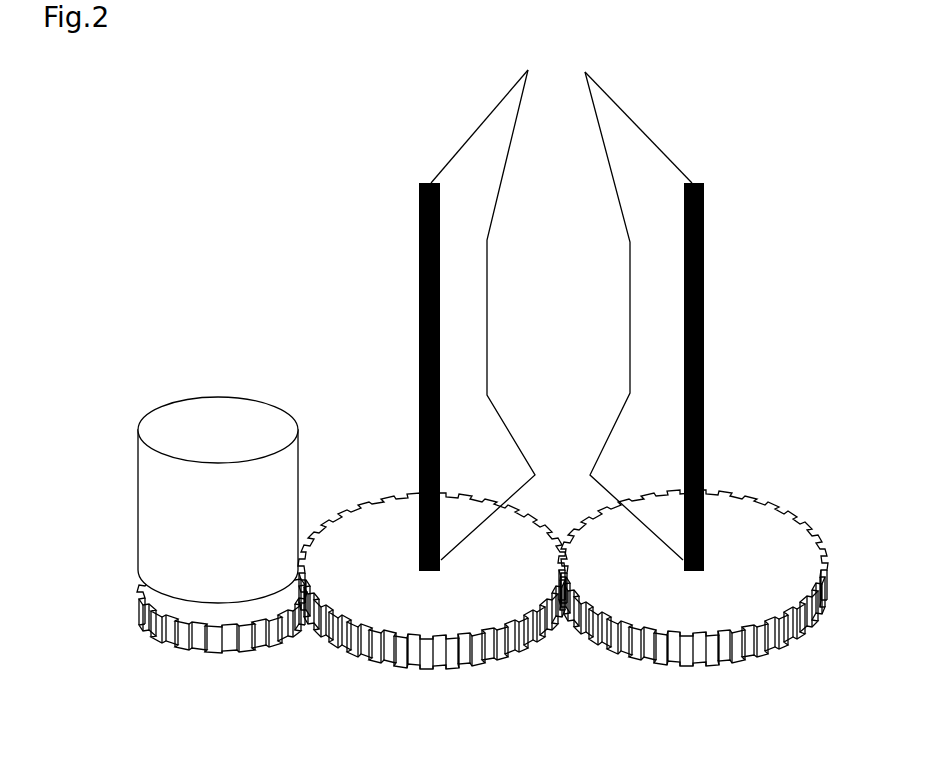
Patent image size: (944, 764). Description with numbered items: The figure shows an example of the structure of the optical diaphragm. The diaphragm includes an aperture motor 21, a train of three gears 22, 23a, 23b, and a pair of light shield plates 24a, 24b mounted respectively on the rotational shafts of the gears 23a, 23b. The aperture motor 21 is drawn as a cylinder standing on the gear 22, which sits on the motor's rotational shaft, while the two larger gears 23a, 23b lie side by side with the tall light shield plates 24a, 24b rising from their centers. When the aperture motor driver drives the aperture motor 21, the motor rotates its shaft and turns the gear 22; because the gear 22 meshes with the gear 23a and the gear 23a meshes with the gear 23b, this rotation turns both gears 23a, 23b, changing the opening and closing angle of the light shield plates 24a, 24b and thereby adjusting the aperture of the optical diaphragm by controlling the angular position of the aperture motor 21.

The aperture motor 21 is at (210, 402).
The gear 22 is at (232, 650).
The gear 23a is at (447, 675).
The gear 23b is at (667, 670).
The light shield plate 24a is at (448, 137).
The light shield plate 24b is at (632, 120).